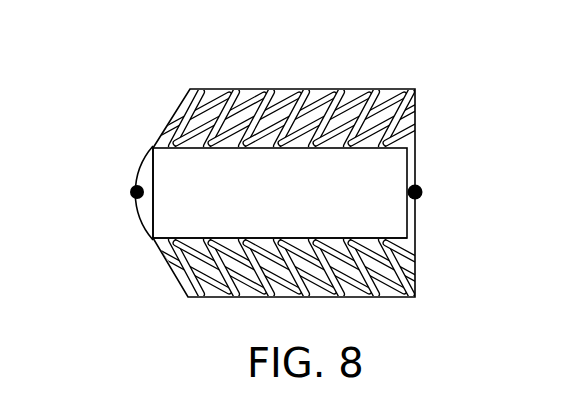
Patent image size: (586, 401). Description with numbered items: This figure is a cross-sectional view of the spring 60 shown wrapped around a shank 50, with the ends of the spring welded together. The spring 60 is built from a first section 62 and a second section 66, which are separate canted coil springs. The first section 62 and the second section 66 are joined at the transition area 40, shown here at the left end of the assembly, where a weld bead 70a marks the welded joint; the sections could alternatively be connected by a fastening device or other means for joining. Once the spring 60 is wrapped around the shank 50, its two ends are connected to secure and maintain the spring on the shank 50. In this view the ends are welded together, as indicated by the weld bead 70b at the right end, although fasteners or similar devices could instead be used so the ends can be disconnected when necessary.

The transition area 40 is at (281, 153).
The shank 50 is at (170, 156).
The spring 60 is at (305, 153).
The first section 62 is at (251, 89).
The second section 66 is at (347, 237).
The weld bead 70a is at (131, 189).
The weld bead 70b is at (423, 191).